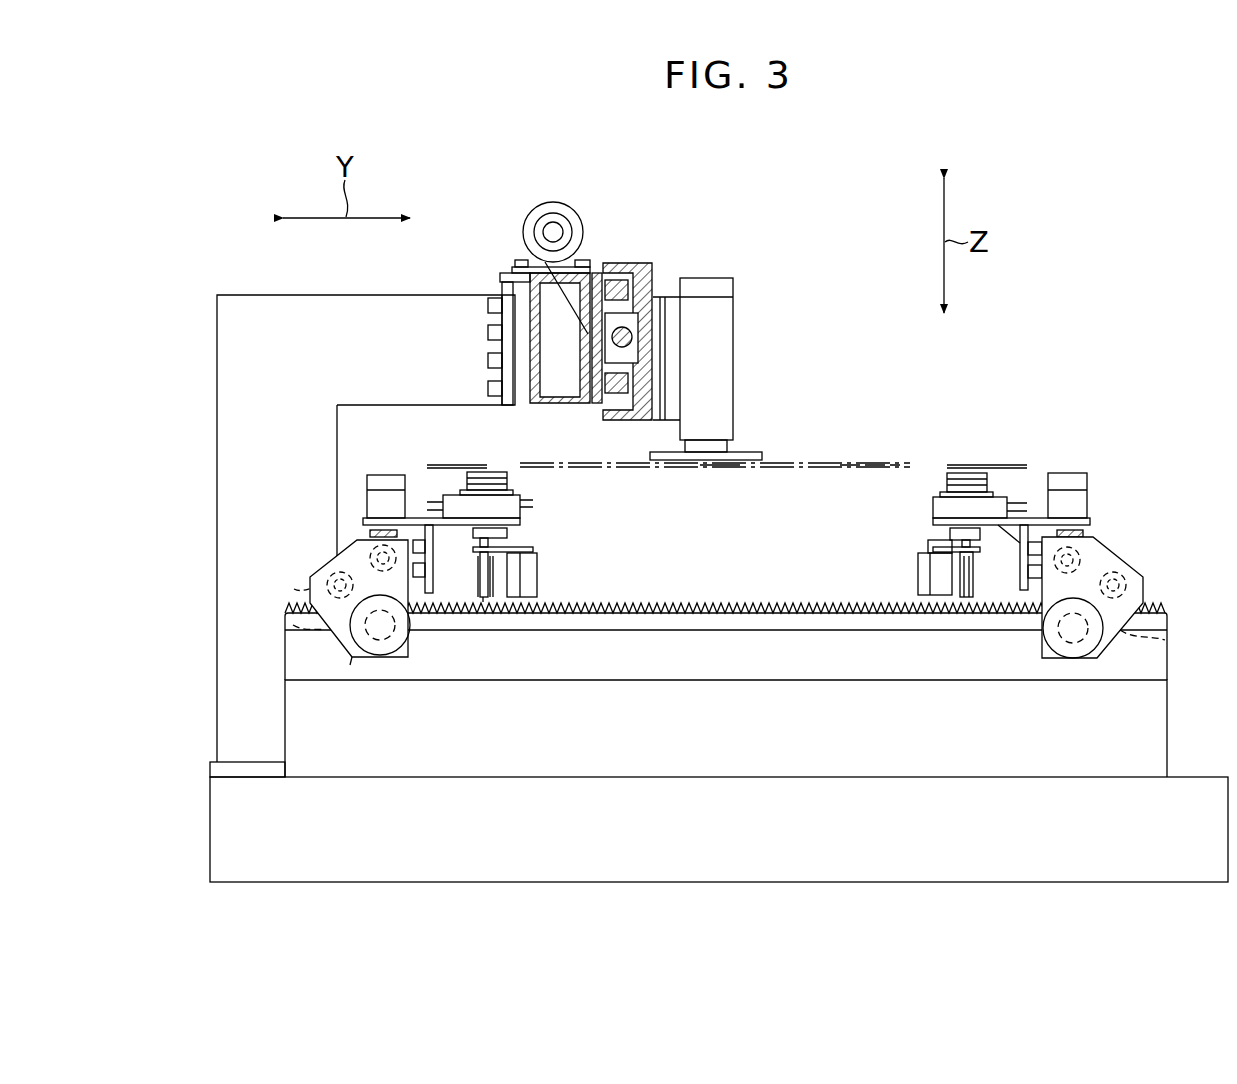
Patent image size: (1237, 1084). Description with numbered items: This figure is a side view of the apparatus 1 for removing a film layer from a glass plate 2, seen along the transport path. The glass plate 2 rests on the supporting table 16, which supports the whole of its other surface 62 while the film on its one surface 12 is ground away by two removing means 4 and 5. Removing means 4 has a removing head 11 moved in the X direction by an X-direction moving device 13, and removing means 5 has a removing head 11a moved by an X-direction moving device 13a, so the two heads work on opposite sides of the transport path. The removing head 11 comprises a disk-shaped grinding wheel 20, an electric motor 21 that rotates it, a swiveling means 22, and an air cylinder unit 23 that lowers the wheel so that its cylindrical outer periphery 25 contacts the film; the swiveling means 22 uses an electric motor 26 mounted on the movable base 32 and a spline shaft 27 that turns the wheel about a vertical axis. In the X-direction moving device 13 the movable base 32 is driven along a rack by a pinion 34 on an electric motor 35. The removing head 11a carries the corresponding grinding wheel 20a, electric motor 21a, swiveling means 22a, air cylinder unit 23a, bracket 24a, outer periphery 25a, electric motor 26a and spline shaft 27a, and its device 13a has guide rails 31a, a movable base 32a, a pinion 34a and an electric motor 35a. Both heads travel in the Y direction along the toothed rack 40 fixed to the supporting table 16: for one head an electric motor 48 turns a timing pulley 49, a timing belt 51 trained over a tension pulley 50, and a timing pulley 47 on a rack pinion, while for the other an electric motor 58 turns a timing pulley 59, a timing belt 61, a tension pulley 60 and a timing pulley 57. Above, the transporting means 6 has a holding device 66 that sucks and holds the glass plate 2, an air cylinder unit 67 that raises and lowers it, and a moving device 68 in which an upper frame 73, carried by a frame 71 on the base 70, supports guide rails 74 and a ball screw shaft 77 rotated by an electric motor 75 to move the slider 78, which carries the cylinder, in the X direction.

The apparatus 1 is at (1152, 296).
The glass plate 2 is at (860, 462).
The removing means 4 is at (1100, 452).
The removing means 5 is at (372, 420).
The transporting means 6 is at (742, 266).
The removing head 11 is at (893, 588).
The removing head 11a is at (455, 460).
The one surface 12 is at (808, 462).
The X-direction moving device 13 is at (1078, 440).
The X-direction moving device 13a is at (347, 484).
The supporting table 16 is at (290, 726).
The grinding wheel 20 is at (962, 600).
The grinding wheel 20a is at (505, 592).
The electric motor 21 is at (925, 568).
The guide block 21a is at (538, 575).
The swiveling means 22 is at (918, 522).
The support plate 22a is at (536, 515).
The air cylinder unit 23 is at (963, 468).
The clamp member 23a is at (495, 468).
The guide rod 24a is at (487, 575).
The cylindrical outer periphery 25 is at (976, 598).
The guide member 25a is at (470, 600).
The electric motor 26 is at (935, 503).
The clamp base 26a is at (521, 505).
The spline shaft 27 is at (956, 540).
The connecting member 27a is at (505, 545).
The bracket 31a is at (430, 555).
The movable base 32 is at (1036, 517).
The movable base 32a is at (370, 518).
The pinion 34 is at (1075, 534).
The linear guide 34a is at (378, 535).
The electric motor 35 is at (1088, 481).
The drive cylinder 35a is at (385, 476).
The toothed rack 40 is at (850, 618).
The timing pulley 47 is at (1128, 586).
The electric motor 48 is at (1094, 658).
The timing pulley 49 is at (1068, 655).
The tension pulley 50 is at (1130, 631).
The timing belt 51 is at (1168, 640).
The timing pulley 57 is at (293, 590).
The electric motor 58 is at (385, 655).
The timing pulley 59 is at (347, 660).
The tension pulley 60 is at (324, 641).
The timing belt 61 is at (292, 634).
The other surface 62 is at (718, 470).
The holding device 66 is at (752, 454).
The air cylinder unit 67 is at (733, 291).
The moving device 68 is at (524, 208).
The base 70 is at (1075, 868).
The frame 71 is at (228, 375).
The upper frame 73 is at (557, 400).
The guide rails 74 is at (617, 281).
The electric motor 75 is at (523, 233).
The ball screw shaft 77 is at (622, 400).
The slider 78 is at (650, 272).